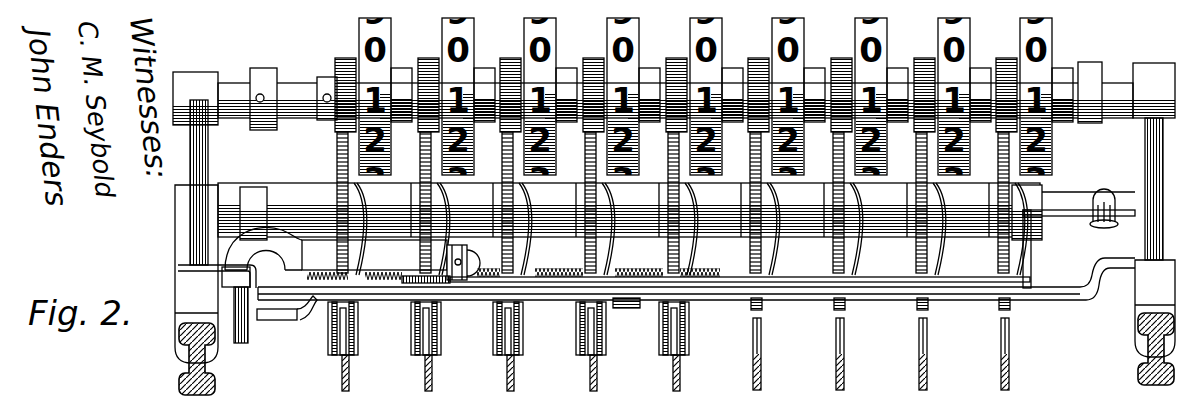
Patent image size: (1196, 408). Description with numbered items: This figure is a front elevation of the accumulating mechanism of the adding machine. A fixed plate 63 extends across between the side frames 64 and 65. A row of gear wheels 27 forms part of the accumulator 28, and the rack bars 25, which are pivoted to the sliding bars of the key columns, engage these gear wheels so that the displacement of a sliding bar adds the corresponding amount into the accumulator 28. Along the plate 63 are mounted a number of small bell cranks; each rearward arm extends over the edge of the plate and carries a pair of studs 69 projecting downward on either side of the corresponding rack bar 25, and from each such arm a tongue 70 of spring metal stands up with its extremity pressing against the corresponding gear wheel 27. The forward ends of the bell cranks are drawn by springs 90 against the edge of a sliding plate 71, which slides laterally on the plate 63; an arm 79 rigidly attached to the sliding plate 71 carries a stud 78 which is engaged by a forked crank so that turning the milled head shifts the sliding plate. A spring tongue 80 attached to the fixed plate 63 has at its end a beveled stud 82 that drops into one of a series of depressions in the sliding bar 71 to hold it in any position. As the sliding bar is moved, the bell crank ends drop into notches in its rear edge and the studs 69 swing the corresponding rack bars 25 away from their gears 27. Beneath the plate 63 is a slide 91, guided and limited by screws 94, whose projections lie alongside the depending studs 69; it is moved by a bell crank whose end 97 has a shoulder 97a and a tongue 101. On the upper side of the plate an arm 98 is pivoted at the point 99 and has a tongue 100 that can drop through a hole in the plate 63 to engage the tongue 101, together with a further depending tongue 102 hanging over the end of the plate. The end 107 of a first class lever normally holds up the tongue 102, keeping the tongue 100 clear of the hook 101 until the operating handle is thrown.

The rack bar 25 is at (673, 380).
The gear wheel 27 is at (915, 254).
The accumulator 28 is at (723, 34).
The plate 63 is at (1053, 291).
The side frame 64 is at (1154, 224).
The side frame 65 is at (182, 302).
The studs 69 is at (603, 330).
The tongue 70 is at (530, 213).
The sliding plate 71 is at (797, 288).
The stud 78 is at (1100, 192).
The arm 79 is at (1028, 251).
The spring tongue 80 is at (716, 283).
The beveled stud 82 is at (492, 285).
The springs 90 is at (552, 272).
The slide 91 is at (555, 301).
The screws 94 is at (634, 309).
The bell crank end 97 is at (380, 302).
The shoulder 97a is at (307, 320).
The arm 98 is at (374, 255).
The pivot point 99 is at (455, 262).
The tongue 100 is at (297, 287).
The tongue 101 is at (309, 333).
The tongue 102 is at (235, 274).
The lever end 107 is at (247, 342).